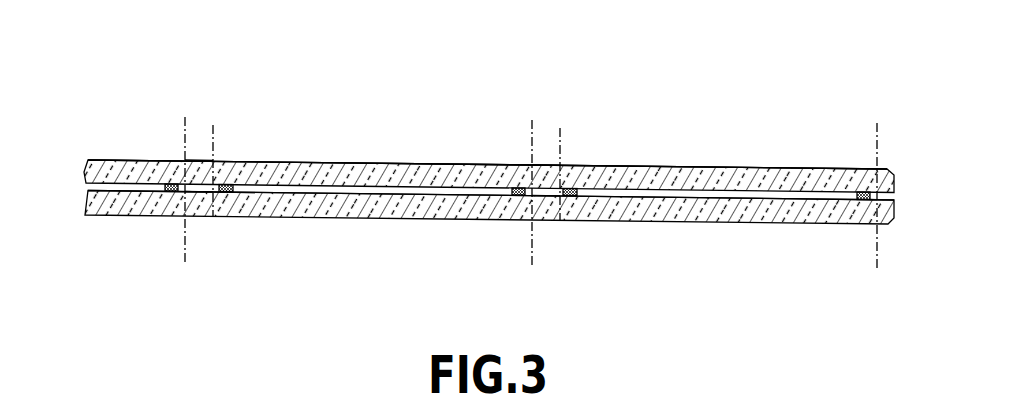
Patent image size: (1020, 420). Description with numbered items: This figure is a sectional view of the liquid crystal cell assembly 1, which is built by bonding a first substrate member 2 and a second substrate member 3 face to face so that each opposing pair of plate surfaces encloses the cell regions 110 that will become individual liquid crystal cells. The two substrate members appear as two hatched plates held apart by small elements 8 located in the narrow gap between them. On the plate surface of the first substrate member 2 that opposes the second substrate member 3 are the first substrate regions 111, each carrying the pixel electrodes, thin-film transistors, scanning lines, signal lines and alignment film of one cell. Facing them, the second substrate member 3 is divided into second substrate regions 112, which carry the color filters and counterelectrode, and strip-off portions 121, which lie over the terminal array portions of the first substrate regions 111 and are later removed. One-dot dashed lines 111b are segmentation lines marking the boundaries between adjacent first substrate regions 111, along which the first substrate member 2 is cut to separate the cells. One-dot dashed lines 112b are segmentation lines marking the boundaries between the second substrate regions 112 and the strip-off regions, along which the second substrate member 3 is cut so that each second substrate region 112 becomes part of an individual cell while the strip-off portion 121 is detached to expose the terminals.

The liquid crystal cell assembly 1 is at (892, 148).
The first substrate member 2 is at (96, 218).
The second substrate member 3 is at (104, 160).
The spacer / adhesive 8 is at (172, 193).
The cell region 110 is at (416, 160).
The first substrate region 111 is at (395, 213).
The one-dot dashed line (segmentation line) 111b is at (184, 242).
The second substrate region 112 is at (345, 163).
The one-dot dashed line (segmentation line) 112b is at (185, 135).
The strip-off portion 121 is at (200, 163).